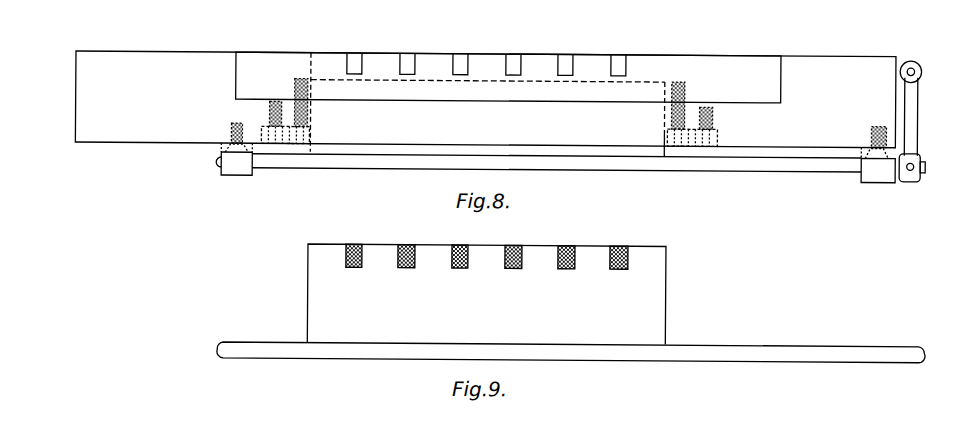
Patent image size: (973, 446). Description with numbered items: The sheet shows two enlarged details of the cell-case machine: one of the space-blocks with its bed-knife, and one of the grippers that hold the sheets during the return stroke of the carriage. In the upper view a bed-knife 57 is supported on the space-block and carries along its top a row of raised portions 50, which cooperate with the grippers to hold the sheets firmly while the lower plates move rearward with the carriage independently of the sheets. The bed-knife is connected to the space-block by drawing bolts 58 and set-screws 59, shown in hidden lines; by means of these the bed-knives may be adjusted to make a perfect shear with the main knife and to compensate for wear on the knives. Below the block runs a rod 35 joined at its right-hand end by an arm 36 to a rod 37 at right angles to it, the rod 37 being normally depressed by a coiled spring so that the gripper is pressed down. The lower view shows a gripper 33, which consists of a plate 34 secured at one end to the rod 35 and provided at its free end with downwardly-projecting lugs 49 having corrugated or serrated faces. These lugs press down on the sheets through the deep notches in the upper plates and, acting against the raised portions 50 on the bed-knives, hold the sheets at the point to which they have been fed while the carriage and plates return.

In FIG. 9, the gripper 33 is at (666, 284).
In FIG. 8, the plate 34 is at (585, 153).
In FIG. 9, the plate 34 is at (469, 306).
In FIG. 8, the rod 35 is at (373, 164).
In FIG. 9, the rod 35 is at (438, 352).
In FIG. 8, the arm 36 is at (918, 125).
In FIG. 8, the rod 37 is at (922, 67).
In FIG. 9, the downwardly-projecting lugs 49 is at (363, 242).
In FIG. 8, the raised portions 50 is at (409, 61).
In FIG. 8, the bed-knives 57 is at (732, 43).
In FIG. 8, the drawing bolts 58 is at (685, 86).
In FIG. 8, the set-screws 59 is at (713, 115).